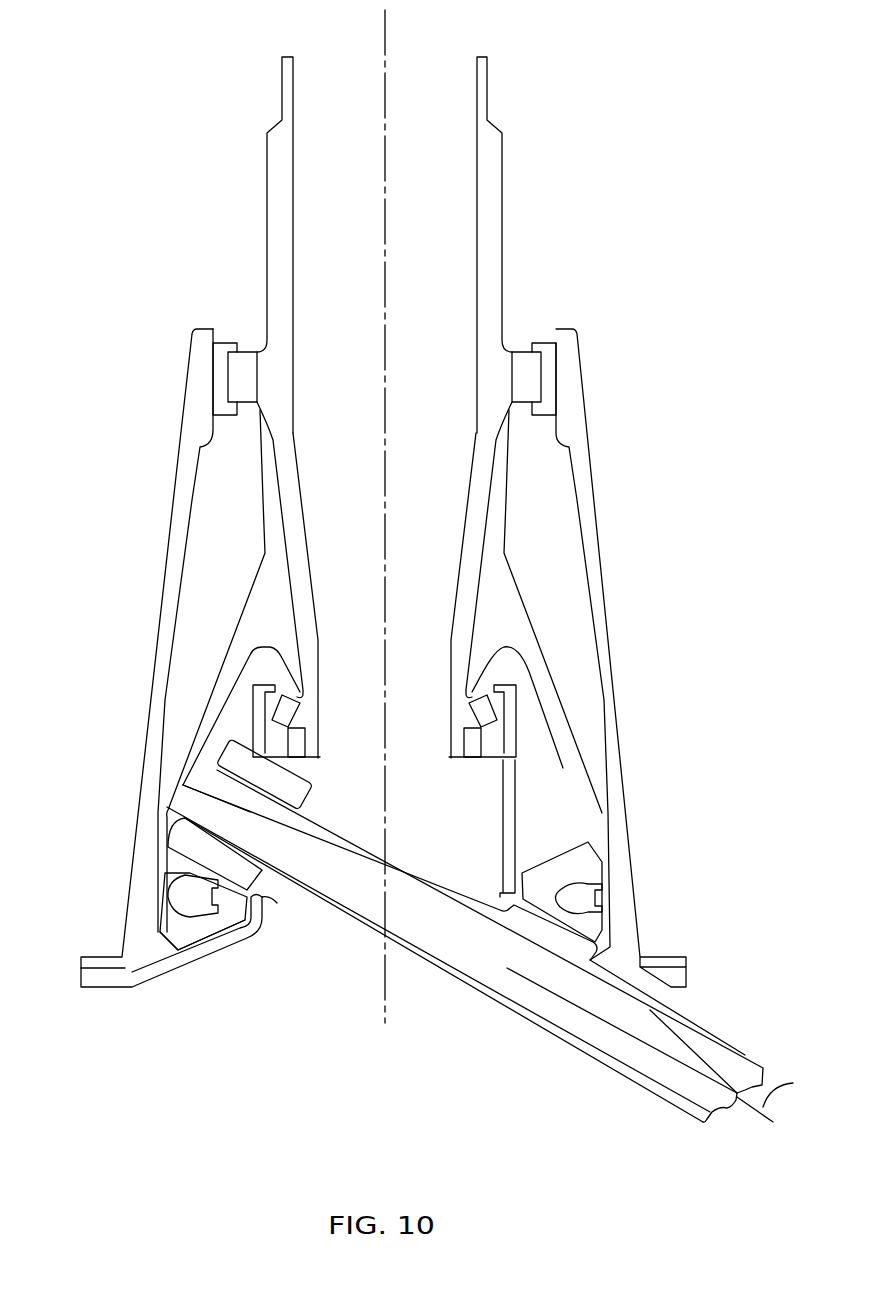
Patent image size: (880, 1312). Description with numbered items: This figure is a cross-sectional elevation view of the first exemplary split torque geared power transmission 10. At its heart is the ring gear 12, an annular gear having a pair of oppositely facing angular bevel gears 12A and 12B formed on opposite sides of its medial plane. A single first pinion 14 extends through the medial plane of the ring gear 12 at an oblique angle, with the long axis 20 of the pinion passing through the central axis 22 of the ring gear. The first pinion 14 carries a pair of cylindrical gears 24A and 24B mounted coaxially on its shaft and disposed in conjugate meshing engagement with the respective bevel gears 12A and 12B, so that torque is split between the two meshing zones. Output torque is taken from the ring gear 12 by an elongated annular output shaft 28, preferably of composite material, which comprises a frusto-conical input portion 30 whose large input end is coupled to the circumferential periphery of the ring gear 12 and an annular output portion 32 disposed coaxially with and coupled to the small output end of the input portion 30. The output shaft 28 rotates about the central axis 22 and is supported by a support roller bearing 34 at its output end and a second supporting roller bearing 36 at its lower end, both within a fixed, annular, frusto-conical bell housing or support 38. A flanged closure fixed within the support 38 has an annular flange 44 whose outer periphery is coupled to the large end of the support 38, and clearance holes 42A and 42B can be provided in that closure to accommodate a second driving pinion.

The split torque geared power transmission 10 is at (650, 243).
The ring gear 12 is at (570, 858).
The angular bevel gear 12A is at (220, 872).
The angular bevel gear 12B is at (555, 905).
The first pinion 14 is at (622, 1082).
The long axis 20 is at (770, 1100).
The central axis 22 is at (388, 24).
The cylindrical gear 24A is at (300, 790).
The cylindrical gear 24B is at (493, 1033).
The output shaft 28 is at (270, 178).
The input portion 30 is at (497, 513).
The output portion 32 is at (497, 310).
The support roller bearing 34 is at (233, 375).
The second supporting roller bearing 36 is at (484, 715).
The bell housing 38 is at (598, 573).
The clearance hole 42A is at (277, 903).
The clearance hole 42B is at (492, 892).
The annular flange 44 is at (515, 770).